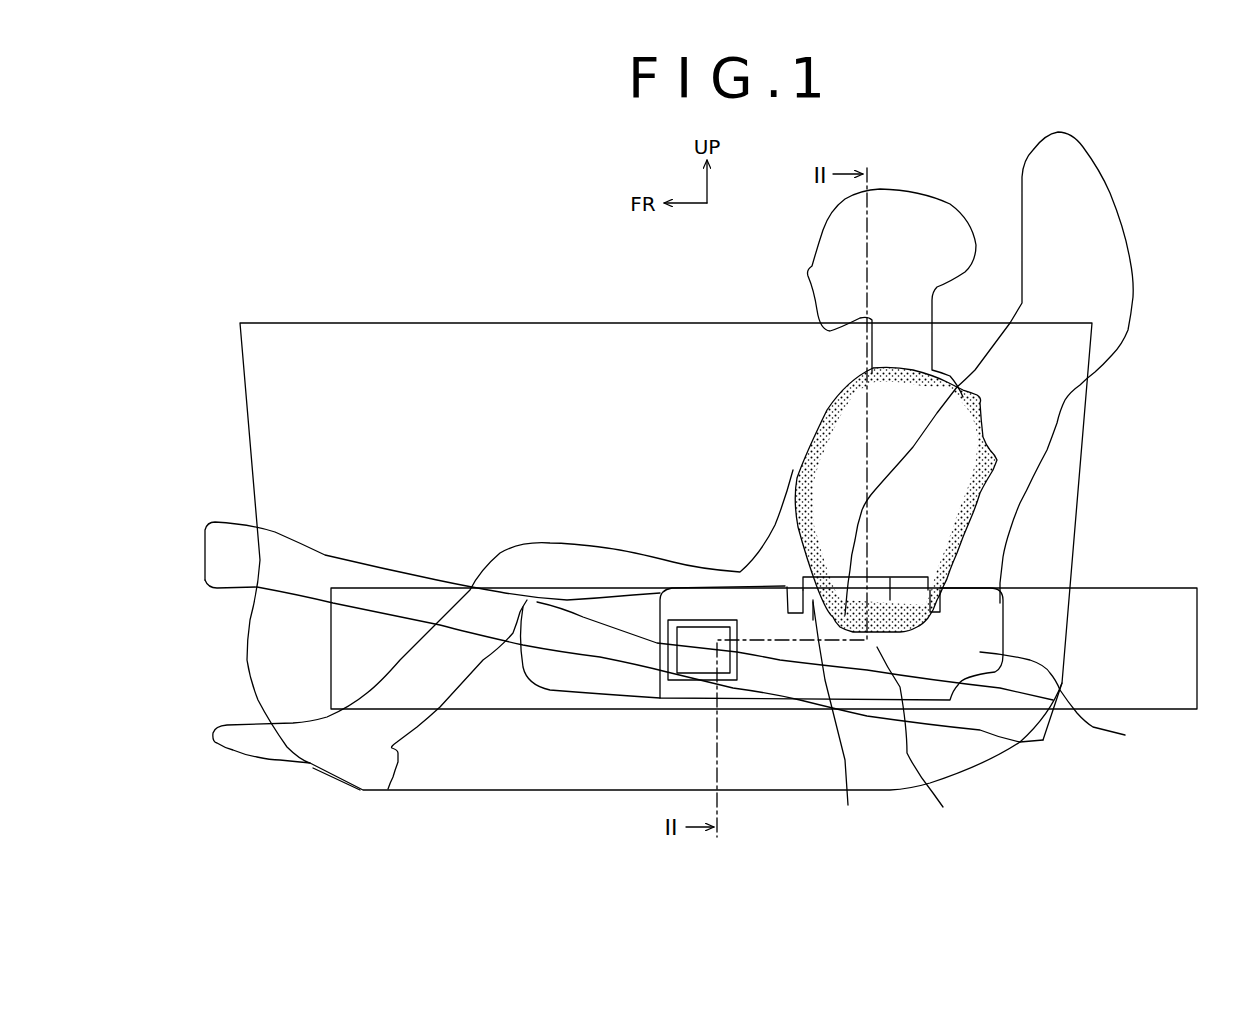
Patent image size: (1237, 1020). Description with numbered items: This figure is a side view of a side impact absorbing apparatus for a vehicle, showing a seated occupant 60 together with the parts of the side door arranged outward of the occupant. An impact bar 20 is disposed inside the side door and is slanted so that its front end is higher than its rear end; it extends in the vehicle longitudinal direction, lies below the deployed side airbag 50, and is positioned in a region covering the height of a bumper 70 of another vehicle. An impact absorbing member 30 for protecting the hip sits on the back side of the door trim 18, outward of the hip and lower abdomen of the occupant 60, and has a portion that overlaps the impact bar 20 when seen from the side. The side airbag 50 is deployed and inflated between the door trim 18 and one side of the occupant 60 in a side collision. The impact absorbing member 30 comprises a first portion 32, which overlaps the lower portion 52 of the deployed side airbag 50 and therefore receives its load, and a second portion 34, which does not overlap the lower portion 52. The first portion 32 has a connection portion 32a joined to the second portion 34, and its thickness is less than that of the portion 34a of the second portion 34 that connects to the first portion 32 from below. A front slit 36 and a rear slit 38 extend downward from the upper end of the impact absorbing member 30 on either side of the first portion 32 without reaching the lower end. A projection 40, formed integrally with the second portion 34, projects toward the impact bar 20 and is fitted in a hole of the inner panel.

The door trim 18 is at (248, 443).
The impact bar 20 is at (308, 553).
The impact absorbing member 30 is at (1007, 627).
The first portion 32 is at (793, 495).
The connection portion 32a is at (844, 721).
The second portion 34 is at (1068, 701).
The portion of the second portion 34a is at (934, 741).
The front slit 36 is at (778, 582).
The rear slit 38 is at (945, 590).
The projection 40 is at (692, 662).
The side airbag 50 is at (977, 416).
The lower portion 52 is at (890, 600).
The occupant 60 is at (772, 527).
The bumper 70 is at (1113, 589).